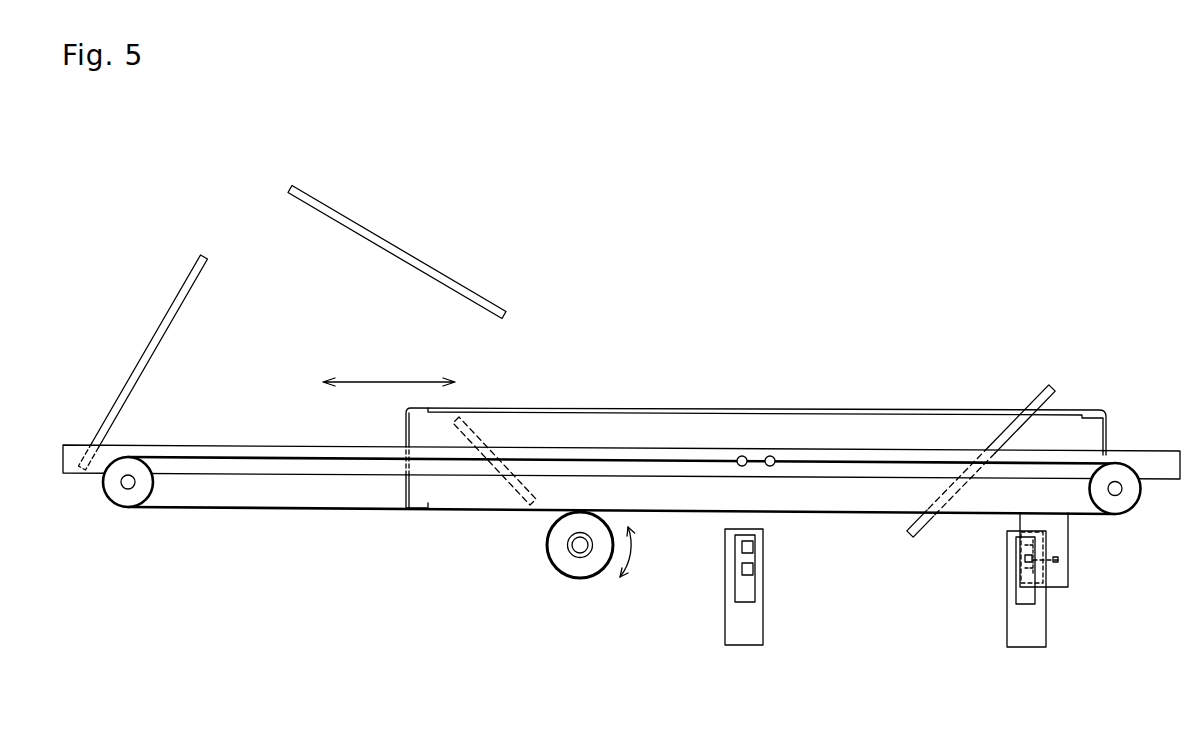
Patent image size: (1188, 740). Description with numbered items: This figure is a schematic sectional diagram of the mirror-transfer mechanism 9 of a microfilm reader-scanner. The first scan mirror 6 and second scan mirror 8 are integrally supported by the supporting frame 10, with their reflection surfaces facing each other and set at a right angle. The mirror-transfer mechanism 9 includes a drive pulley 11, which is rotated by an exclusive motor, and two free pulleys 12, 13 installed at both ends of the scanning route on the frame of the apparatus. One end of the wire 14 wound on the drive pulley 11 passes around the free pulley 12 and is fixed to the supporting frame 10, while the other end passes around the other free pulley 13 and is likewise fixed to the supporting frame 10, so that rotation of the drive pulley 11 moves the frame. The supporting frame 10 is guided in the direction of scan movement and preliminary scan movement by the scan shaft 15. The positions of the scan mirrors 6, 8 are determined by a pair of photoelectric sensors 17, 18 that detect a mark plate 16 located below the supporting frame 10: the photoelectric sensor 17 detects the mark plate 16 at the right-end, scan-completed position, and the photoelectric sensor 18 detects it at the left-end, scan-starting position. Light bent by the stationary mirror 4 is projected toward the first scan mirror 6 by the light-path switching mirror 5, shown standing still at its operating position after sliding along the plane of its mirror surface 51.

The stationary mirror 4 is at (166, 317).
The light-path switching mirror 5 is at (417, 258).
The mirror surface 51 is at (338, 225).
The first scan mirror 6 is at (502, 495).
The second scan mirror 8 is at (921, 524).
The mirror-transfer mechanism 9 is at (871, 232).
The supporting frame 10 is at (861, 408).
The drive pulley 11 is at (563, 575).
The free pulley 12 is at (122, 500).
The free pulley 13 is at (1128, 497).
The wire 14 is at (308, 509).
The scan shaft 15 is at (1137, 451).
The mark plate 16 is at (1062, 578).
The photoelectric sensor 17 is at (1024, 604).
The photoelectric sensor 18 is at (743, 598).